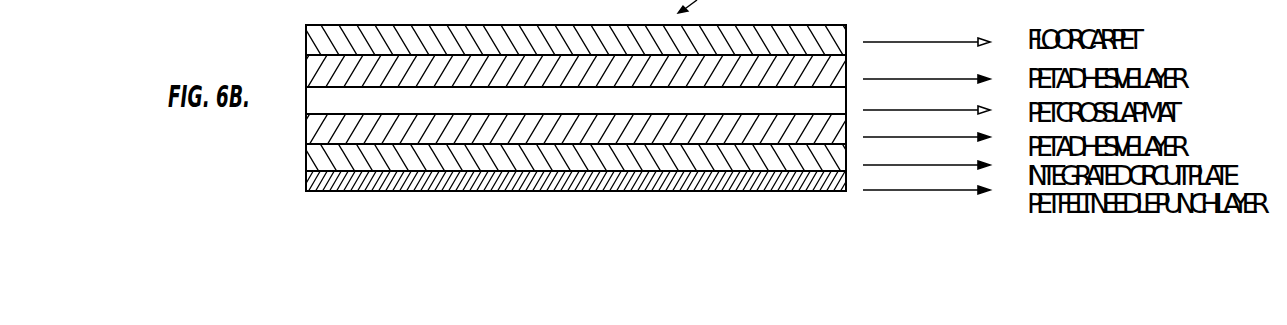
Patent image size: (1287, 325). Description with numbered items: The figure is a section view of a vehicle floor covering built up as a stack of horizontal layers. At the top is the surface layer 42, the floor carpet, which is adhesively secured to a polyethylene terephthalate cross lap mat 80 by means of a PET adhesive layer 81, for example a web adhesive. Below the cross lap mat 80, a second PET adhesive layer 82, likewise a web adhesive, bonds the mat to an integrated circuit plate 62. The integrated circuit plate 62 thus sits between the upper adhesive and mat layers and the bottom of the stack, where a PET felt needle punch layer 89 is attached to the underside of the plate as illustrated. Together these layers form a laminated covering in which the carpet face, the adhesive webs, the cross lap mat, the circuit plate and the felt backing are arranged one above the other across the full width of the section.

The surface layer 42 is at (305, 41).
The PET adhesive layer 81 is at (305, 72).
The PET cross lap mat 80 is at (303, 100).
The PET adhesive layer 82 is at (305, 132).
The integrated circuit plate 62 is at (305, 162).
The PET felt needle punch layer 89 is at (305, 185).